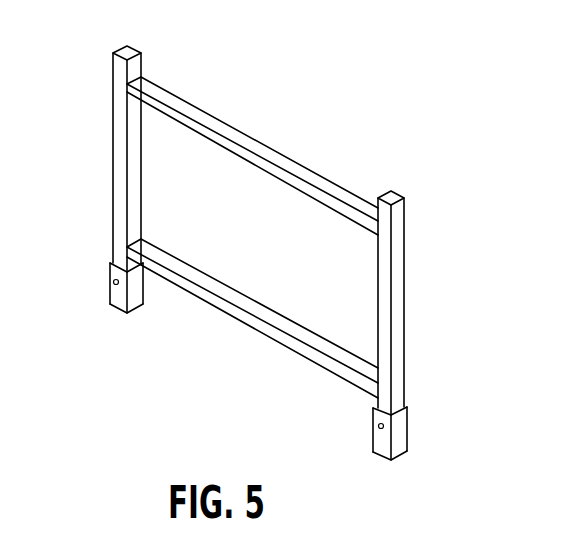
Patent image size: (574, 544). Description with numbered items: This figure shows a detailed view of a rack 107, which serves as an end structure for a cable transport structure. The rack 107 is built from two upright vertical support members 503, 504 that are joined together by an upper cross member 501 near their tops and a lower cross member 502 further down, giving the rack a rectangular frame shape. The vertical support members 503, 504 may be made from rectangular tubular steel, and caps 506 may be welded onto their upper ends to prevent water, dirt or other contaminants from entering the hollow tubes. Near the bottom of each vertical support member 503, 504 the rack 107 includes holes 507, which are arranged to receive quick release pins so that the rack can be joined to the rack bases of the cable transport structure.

The rack 107 is at (358, 108).
The upper cross member 501 is at (240, 133).
The lower cross member 502 is at (246, 294).
The vertical support member 503 is at (113, 162).
The vertical support member 504 is at (405, 328).
The cap 506 is at (128, 52).
The hole 507 is at (115, 283).